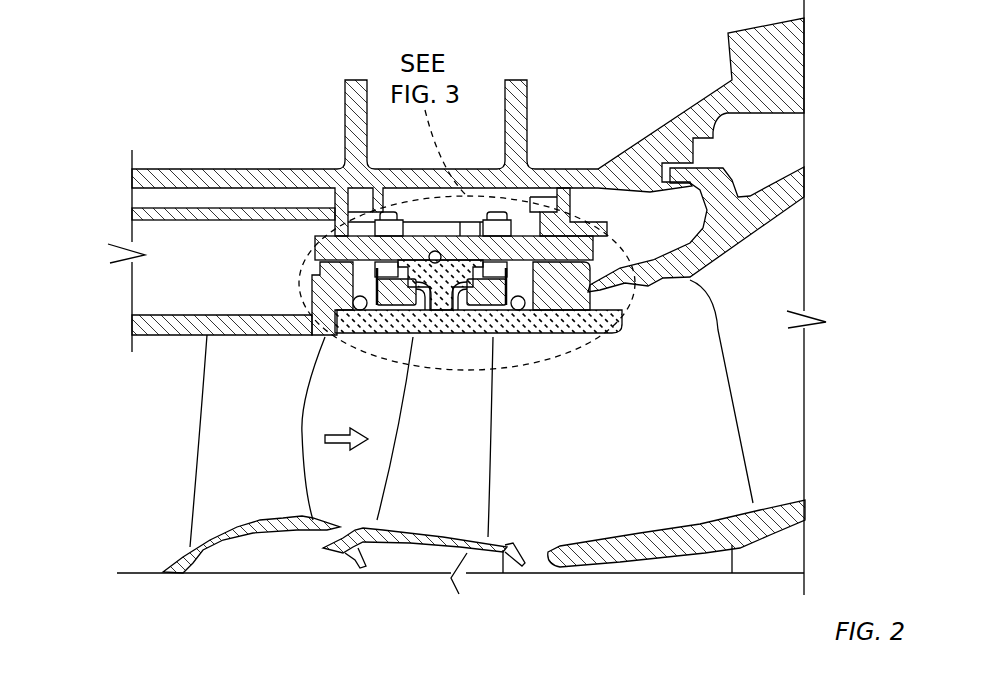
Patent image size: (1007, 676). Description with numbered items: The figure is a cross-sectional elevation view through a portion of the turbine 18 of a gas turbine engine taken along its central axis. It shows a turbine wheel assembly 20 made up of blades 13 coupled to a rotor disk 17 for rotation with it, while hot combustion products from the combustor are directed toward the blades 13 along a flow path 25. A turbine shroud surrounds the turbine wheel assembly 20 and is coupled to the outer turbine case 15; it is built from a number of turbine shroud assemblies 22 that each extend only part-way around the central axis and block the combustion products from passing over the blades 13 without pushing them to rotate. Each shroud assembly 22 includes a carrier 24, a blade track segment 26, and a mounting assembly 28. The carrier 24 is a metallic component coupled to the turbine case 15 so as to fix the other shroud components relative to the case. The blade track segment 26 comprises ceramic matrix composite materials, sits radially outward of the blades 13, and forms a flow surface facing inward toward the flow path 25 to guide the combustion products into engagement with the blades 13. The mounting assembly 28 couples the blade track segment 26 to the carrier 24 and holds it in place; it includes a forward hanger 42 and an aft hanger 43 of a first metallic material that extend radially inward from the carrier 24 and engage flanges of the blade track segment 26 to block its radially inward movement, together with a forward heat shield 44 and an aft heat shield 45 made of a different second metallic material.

The blades 13 is at (494, 447).
The turbine case 15 is at (243, 166).
The rotor disk 17 is at (342, 568).
The turbine 18 is at (134, 80).
The turbine wheel assembly 20 is at (525, 570).
The turbine shroud assembly 22 is at (564, 223).
The carrier 24 is at (308, 251).
The flow path 25 is at (650, 456).
The blade track segment 26 is at (396, 336).
The mounting assembly 28 is at (356, 250).
The forward hanger 42 is at (362, 274).
The aft hanger 43 is at (508, 276).
The forward heat shield 44 is at (402, 346).
The aft heat shield 45 is at (499, 318).